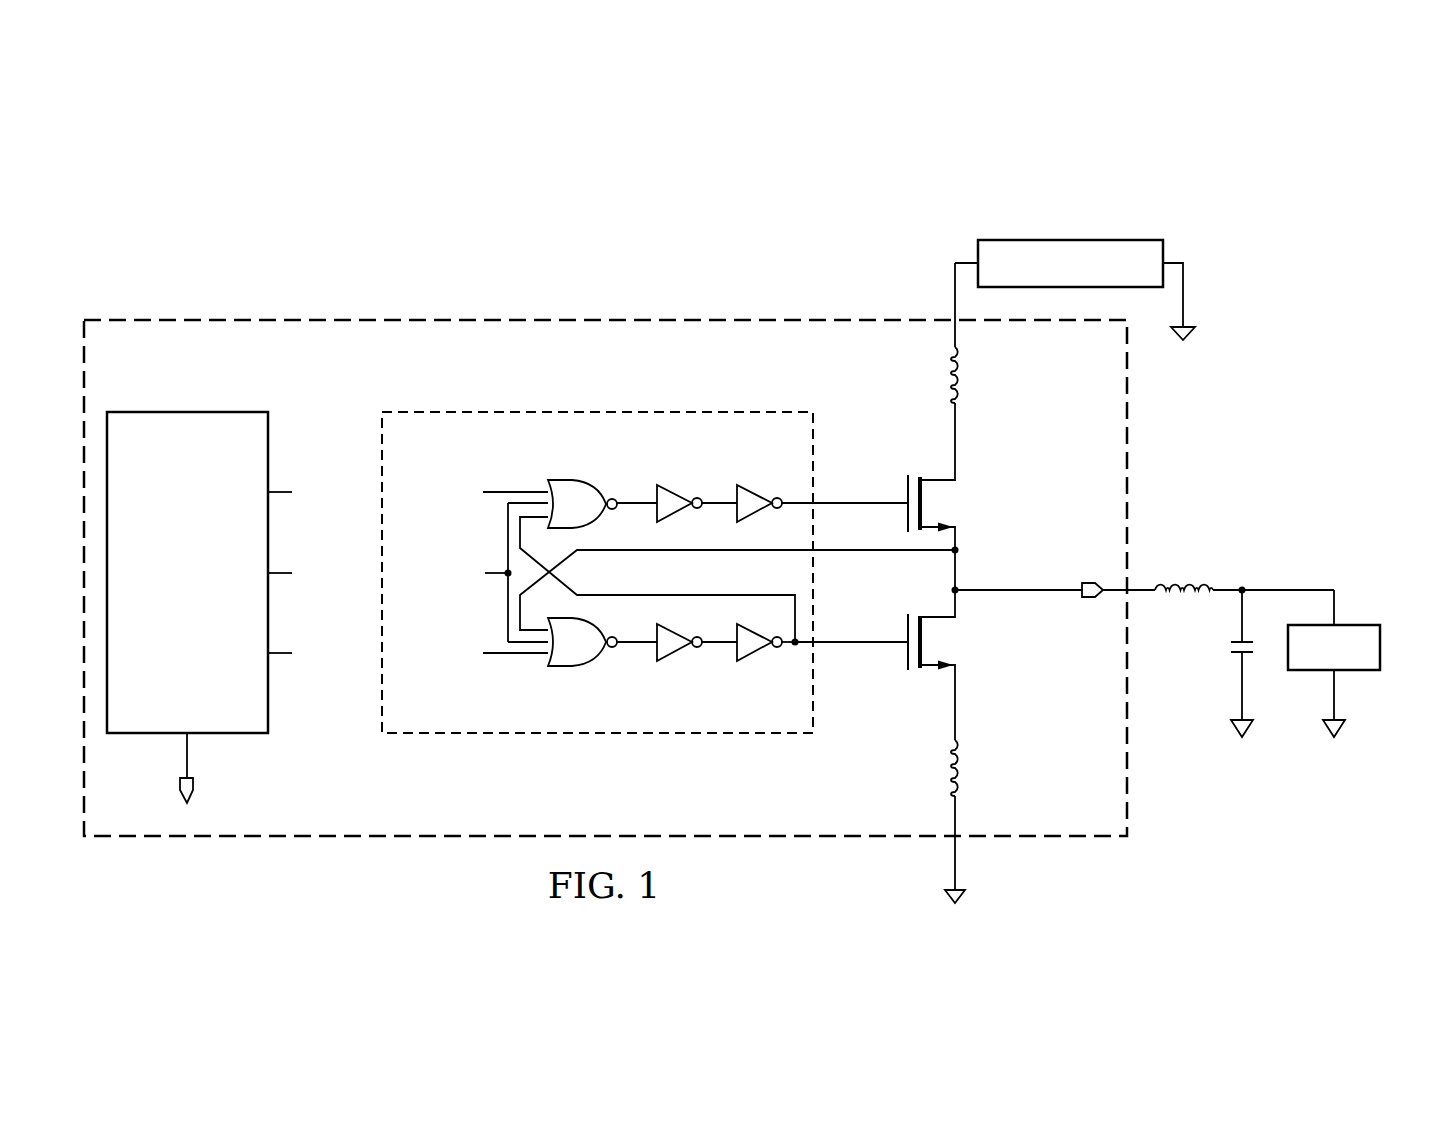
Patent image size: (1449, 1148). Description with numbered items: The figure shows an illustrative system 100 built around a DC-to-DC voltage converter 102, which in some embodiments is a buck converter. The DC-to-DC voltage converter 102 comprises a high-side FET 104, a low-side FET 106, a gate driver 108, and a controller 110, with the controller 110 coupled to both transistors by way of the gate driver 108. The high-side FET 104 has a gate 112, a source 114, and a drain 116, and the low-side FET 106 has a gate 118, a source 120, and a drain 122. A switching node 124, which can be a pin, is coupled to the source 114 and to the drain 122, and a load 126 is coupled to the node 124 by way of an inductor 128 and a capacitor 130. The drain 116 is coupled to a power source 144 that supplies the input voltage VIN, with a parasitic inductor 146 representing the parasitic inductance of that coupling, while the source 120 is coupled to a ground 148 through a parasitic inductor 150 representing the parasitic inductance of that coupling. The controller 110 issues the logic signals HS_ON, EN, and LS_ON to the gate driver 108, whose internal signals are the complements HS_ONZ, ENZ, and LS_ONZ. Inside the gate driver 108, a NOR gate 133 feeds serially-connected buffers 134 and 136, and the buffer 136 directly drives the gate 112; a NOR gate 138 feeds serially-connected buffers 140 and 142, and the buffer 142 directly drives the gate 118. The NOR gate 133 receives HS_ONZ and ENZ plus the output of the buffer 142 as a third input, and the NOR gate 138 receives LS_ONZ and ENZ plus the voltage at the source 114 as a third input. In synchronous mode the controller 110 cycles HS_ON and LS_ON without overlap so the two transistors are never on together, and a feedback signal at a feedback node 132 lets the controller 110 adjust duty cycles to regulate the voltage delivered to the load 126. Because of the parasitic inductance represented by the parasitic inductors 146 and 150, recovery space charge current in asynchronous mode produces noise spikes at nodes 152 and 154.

The system 100 is at (178, 131).
The DC-to-DC voltage converter 102 is at (379, 314).
The high-side FET 104 is at (905, 518).
The low-side FET 106 is at (905, 655).
The gate driver 108 is at (529, 405).
The controller 110 is at (165, 412).
The gate 112 is at (900, 503).
The source 114 is at (958, 540).
The drain 116 is at (958, 470).
The gate 118 is at (900, 640).
The source 120 is at (958, 675).
The drain 122 is at (958, 605).
The node 124 is at (1088, 583).
The load 126 is at (1380, 648).
The inductor 128 is at (1185, 578).
The capacitor 130 is at (1231, 645).
The feedback node 132 is at (180, 783).
The NOR gate 133 is at (577, 480).
The buffer 134 is at (676, 485).
The buffer 136 is at (756, 485).
The NOR gate 138 is at (577, 665).
The buffer 140 is at (676, 660).
The buffer 142 is at (756, 660).
The power source 144 is at (1072, 240).
The parasitic inductor 146 is at (966, 378).
The ground 148 is at (965, 897).
The parasitic inductor 150 is at (967, 770).
The node 152 is at (958, 423).
The node 154 is at (958, 722).